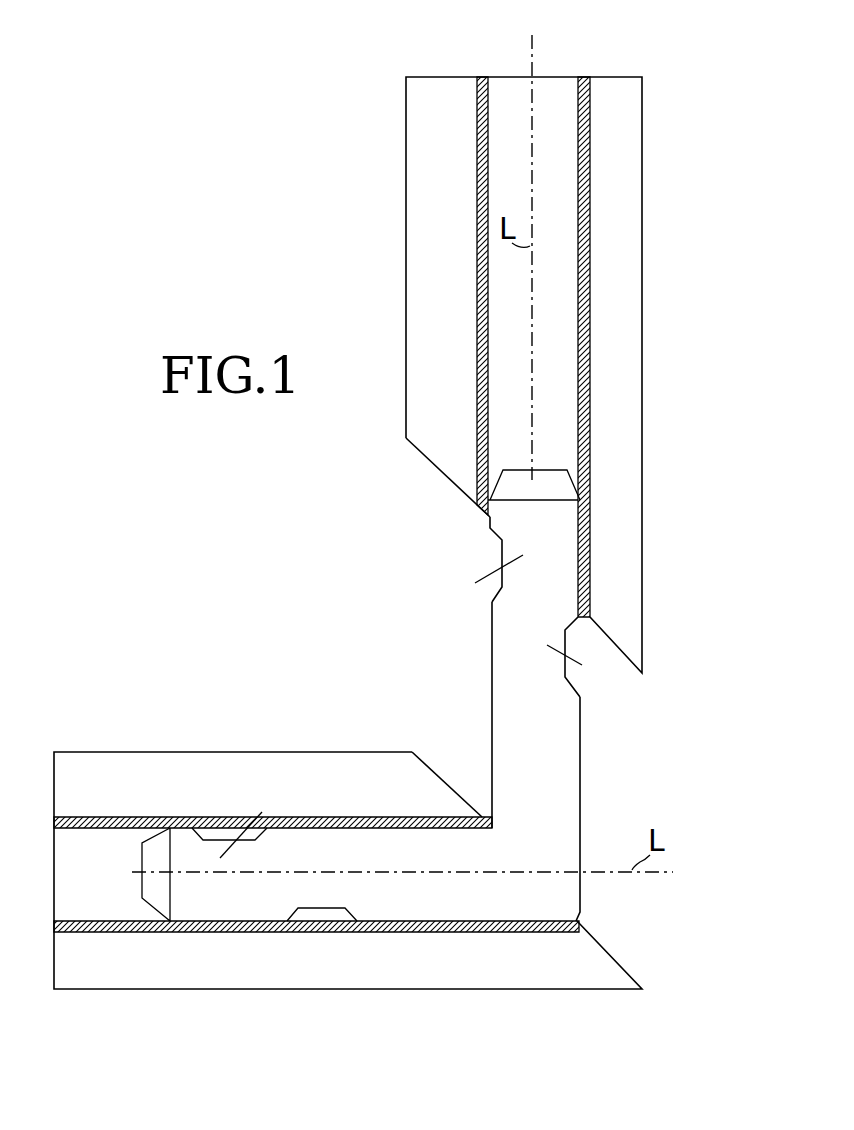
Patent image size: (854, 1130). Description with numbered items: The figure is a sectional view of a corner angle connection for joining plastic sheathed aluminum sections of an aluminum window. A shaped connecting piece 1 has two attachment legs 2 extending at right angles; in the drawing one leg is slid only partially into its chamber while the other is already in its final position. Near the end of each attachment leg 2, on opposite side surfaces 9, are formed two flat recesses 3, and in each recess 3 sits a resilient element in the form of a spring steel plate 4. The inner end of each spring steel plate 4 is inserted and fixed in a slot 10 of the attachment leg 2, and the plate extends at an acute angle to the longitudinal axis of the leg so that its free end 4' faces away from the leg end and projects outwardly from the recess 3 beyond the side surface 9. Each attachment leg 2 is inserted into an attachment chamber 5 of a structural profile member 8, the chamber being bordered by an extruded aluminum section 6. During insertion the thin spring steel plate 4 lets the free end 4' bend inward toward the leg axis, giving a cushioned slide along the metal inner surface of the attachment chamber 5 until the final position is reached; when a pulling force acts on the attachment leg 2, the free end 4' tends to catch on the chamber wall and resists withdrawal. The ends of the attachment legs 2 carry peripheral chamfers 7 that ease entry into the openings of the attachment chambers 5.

The shaped connecting piece 1 is at (565, 798).
The attachment leg 2 is at (562, 518).
The flat recess 3 is at (488, 550).
The spring steel plate 4 is at (424, 719).
The free end 4' is at (371, 706).
The attachment chamber 5 is at (556, 95).
The extruded aluminum section 6 is at (590, 231).
The peripheral chamfer 7 is at (545, 480).
The structural profile member 8 is at (658, 315).
The side surface 9 is at (490, 673).
The slot 10 is at (513, 570).